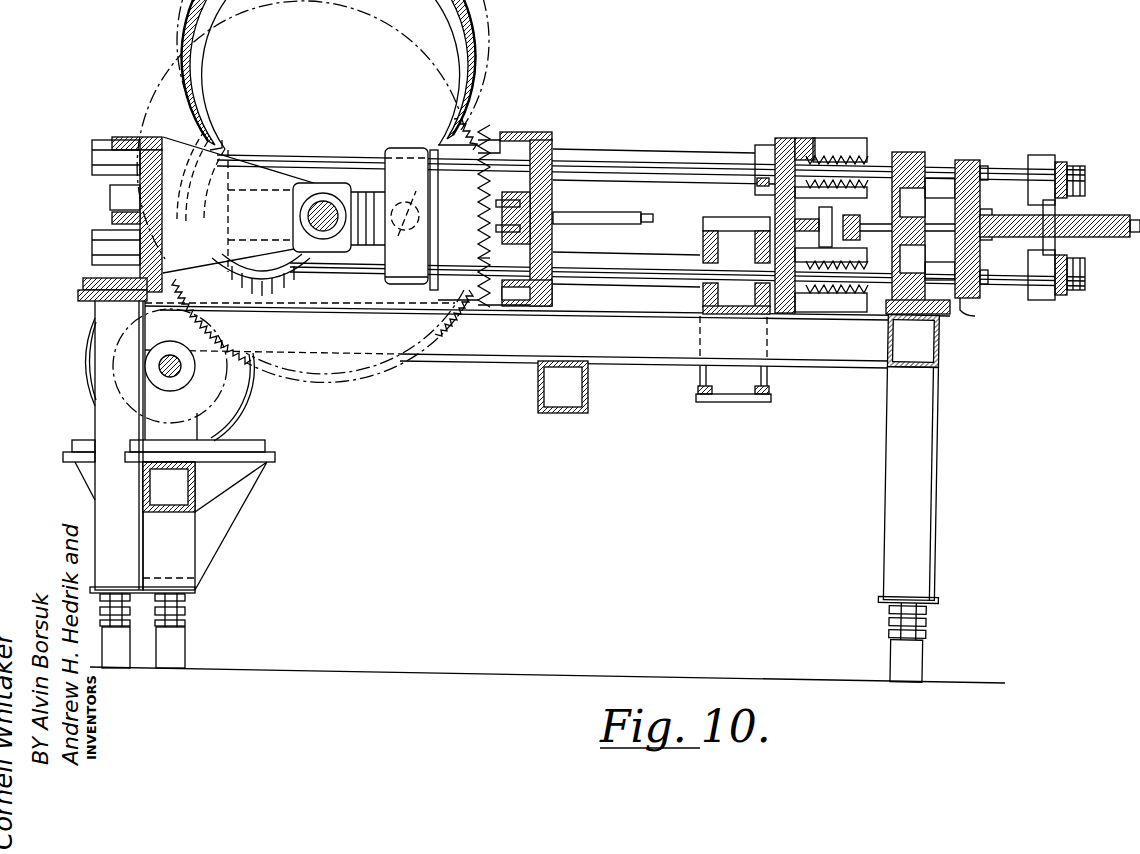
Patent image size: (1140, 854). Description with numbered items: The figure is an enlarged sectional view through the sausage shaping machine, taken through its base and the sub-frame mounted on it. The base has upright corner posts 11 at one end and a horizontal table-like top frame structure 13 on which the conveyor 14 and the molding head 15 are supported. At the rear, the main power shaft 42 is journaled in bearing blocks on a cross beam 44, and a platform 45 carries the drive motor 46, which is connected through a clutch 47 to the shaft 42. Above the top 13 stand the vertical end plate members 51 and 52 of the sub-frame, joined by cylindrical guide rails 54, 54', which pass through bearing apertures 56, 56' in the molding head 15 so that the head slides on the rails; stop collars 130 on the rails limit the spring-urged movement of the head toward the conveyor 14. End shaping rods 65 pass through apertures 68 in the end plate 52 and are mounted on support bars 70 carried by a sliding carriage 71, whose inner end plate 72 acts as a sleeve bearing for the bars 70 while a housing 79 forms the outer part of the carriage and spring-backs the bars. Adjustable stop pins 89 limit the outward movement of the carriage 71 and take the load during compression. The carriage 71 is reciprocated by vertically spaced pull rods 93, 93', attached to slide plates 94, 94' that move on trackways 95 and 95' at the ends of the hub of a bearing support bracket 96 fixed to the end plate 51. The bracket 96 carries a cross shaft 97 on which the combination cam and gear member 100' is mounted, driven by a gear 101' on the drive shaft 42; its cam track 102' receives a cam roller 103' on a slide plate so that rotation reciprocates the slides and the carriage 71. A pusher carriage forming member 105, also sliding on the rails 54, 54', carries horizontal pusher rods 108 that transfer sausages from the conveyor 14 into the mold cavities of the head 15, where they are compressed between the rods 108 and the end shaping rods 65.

The upright corner posts 11 is at (896, 405).
The top frame structure 13 is at (823, 356).
The conveyor 14 is at (725, 400).
The molding head 15 is at (790, 142).
The main power shaft 42 is at (166, 377).
The cross beam 44 is at (197, 492).
The platform 45 is at (278, 460).
The drive motor 46 is at (90, 345).
The clutch 47 is at (246, 383).
The end plate member 51 is at (180, 137).
The end plate member 52 is at (908, 152).
The guide rail 54 is at (651, 158).
The guide rail 54' is at (687, 261).
The bearing aperture 56 is at (848, 160).
The bearing aperture 56' is at (840, 273).
The end shaping rods 65 is at (868, 229).
The apertures 68 is at (918, 224).
The support bars 70 is at (928, 226).
The carriage 71 is at (962, 160).
The inner end plate 72 is at (975, 304).
The housing 79 is at (1096, 226).
The stop pins 89 is at (1040, 175).
The pull rod 93 is at (467, 197).
The pull rod 93' is at (466, 250).
The slide plate 94 is at (200, 109).
The slide plate 94' is at (404, 231).
The trackway 95 is at (339, 187).
The trackway 95' is at (319, 183).
The bearing support bracket 96 is at (224, 168).
The cross shaft 97 is at (321, 231).
The combination cam and gear member 100' is at (307, 212).
The gear 101' is at (241, 397).
The cam track 102' is at (333, 112).
The cam roller 103' is at (454, 222).
The carriage forming member 105 is at (518, 140).
The pusher rods 108 is at (628, 212).
The stop collars 130 is at (766, 146).